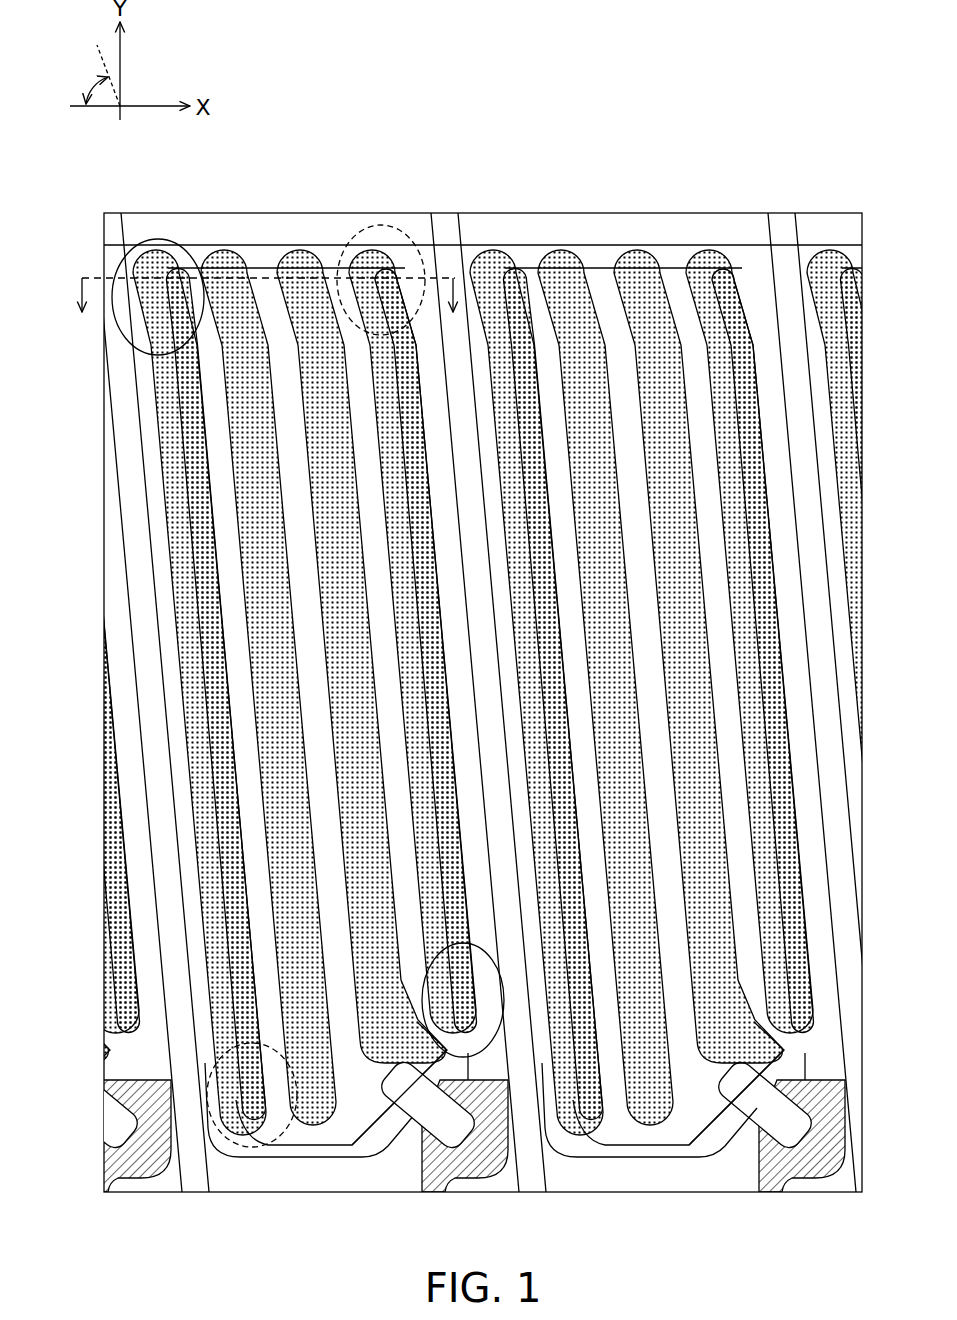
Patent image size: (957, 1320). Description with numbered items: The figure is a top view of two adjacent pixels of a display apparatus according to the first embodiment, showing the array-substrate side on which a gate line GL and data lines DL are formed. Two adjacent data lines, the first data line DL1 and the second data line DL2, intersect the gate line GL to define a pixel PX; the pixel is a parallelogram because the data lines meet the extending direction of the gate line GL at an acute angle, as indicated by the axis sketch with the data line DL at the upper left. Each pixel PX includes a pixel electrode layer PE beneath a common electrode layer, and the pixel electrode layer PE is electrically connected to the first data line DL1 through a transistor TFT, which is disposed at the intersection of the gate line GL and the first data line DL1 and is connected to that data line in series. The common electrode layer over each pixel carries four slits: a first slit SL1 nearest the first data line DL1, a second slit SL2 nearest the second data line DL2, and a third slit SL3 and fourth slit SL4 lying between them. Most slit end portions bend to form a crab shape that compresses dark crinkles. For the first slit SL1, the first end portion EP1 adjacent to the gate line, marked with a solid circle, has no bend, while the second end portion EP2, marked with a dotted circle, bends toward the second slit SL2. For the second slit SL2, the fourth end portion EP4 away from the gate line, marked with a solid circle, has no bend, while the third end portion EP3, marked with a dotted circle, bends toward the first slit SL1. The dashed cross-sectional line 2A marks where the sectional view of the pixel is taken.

The first data line DL1 is at (449, 225).
The second data line DL2 is at (103, 262).
The first slit SL1 is at (377, 246).
The second slit SL2 is at (183, 250).
The third slit SL3 is at (318, 246).
The fourth slit SL4 is at (254, 248).
The first end portion EP1 is at (505, 1050).
The second end portion EP2 is at (408, 232).
The third end portion EP3 is at (265, 1158).
The fourth end portion EP4 is at (127, 248).
The pixel PX is at (237, 1162).
The pixel electrode layer PE is at (352, 1150).
The gate line GL is at (318, 1175).
The transistor TFT is at (458, 1185).
The cross-sectional line 2A- 2A is at (269, 312).
The data line DL is at (98, 66).